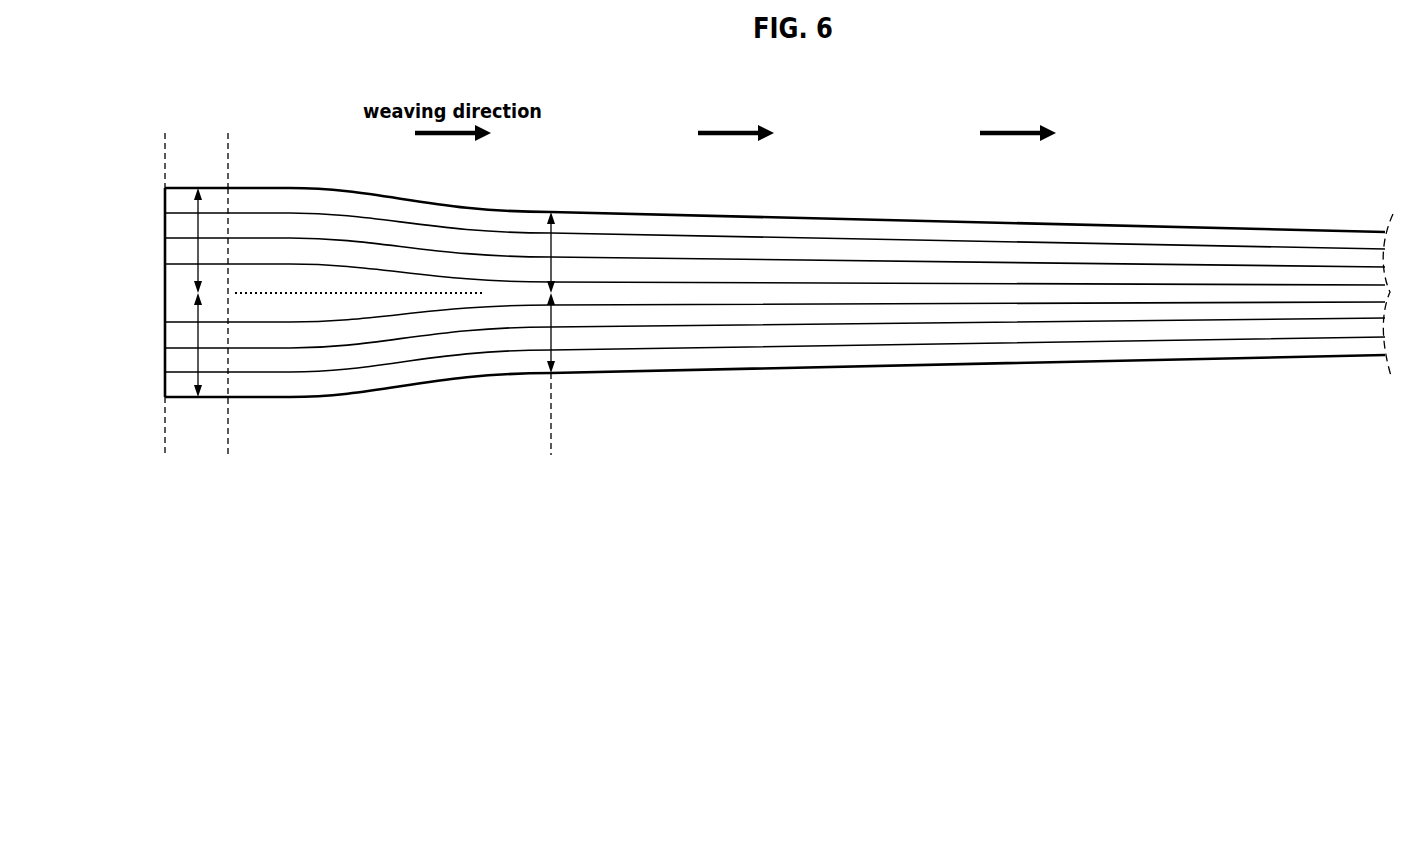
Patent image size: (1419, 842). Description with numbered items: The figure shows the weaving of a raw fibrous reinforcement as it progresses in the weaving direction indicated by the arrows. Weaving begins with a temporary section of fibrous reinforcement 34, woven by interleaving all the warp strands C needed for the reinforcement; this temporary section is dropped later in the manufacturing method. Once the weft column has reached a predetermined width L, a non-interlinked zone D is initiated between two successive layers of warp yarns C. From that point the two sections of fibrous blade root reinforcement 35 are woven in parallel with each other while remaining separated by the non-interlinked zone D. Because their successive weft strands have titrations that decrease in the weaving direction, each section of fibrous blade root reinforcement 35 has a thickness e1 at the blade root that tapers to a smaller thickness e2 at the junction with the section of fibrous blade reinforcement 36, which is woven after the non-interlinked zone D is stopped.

The thickness at the blade root e1 is at (196, 228).
The thickness at the junction e2 is at (553, 247).
The predetermined width L is at (175, 149).
The warp strands C is at (327, 265).
The non-interlinked zone D is at (370, 293).
The temporary section of fibrous reinforcement 34 is at (165, 455).
The section of fibrous blade root reinforcement 35 is at (228, 455).
The section of fibrous blade reinforcement 36 is at (551, 455).